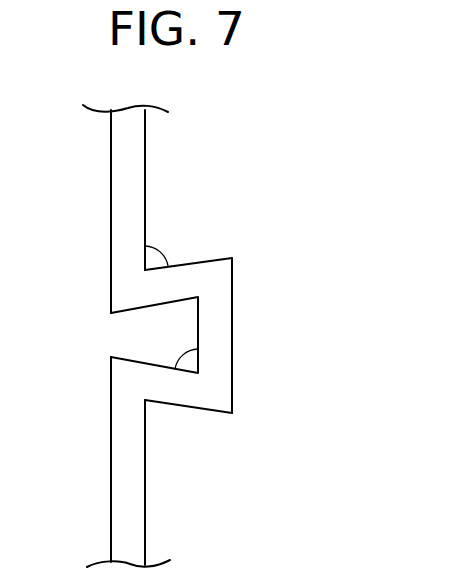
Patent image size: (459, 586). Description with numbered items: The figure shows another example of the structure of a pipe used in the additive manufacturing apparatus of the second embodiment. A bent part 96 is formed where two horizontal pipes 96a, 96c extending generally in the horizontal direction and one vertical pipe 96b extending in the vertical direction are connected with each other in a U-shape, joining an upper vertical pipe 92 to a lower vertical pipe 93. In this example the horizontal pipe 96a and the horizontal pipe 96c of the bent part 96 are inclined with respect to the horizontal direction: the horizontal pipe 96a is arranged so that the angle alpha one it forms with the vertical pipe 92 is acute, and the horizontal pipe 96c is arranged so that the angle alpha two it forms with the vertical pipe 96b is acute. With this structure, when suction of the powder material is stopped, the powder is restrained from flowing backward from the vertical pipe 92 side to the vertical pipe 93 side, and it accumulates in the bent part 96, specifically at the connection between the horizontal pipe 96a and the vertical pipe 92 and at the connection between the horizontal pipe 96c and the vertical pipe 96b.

The vertical pipe 92 is at (110, 223).
The vertical pipe 93 is at (112, 472).
The bent part 96 is at (224, 320).
The horizontal pipe 96a is at (208, 258).
The vertical pipe 96b is at (233, 339).
The horizontal pipe 96c is at (187, 410).